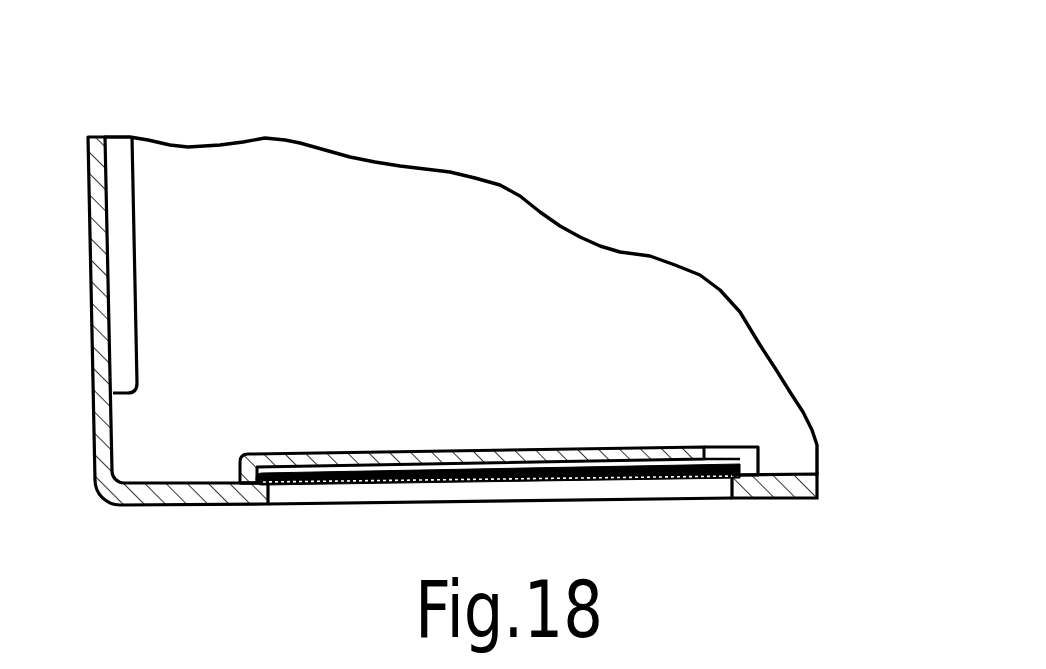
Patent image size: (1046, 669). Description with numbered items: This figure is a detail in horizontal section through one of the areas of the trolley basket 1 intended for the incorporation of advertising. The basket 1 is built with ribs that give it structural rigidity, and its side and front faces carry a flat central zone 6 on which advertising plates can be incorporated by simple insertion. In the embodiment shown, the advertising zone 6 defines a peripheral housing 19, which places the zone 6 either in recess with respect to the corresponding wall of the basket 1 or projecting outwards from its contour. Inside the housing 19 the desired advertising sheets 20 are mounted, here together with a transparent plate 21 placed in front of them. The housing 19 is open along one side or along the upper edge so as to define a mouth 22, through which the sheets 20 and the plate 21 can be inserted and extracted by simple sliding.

The basket 1 is at (107, 130).
The flat central zone 6 is at (347, 508).
The peripheral housing 19 is at (241, 492).
The advertising sheet 20 is at (712, 449).
The transparent plate 21 is at (666, 480).
The mouth 22 is at (768, 452).